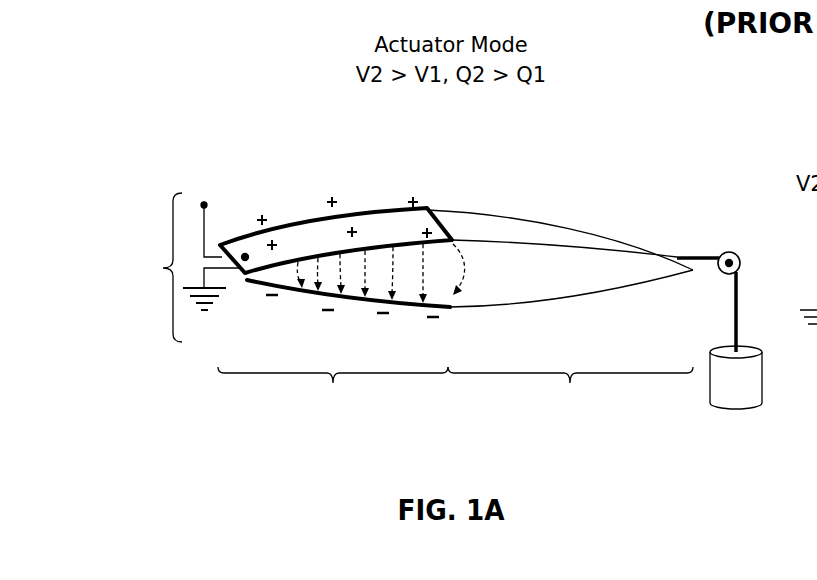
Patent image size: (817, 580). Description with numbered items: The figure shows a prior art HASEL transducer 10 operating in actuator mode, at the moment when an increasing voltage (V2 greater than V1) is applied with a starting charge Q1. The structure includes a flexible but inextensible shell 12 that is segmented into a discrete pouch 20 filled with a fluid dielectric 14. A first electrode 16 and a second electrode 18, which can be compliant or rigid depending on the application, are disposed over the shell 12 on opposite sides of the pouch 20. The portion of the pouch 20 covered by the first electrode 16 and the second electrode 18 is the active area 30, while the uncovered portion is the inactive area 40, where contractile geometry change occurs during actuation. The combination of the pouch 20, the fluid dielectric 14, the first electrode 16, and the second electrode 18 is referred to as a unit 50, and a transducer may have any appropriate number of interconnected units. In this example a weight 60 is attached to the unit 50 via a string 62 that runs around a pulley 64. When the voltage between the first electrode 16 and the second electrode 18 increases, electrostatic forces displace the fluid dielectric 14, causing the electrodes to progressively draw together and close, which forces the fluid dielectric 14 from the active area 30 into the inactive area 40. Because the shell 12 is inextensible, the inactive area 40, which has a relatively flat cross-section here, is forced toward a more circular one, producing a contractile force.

The HASEL transducer 10 is at (587, 167).
The shell 12 is at (480, 213).
The fluid dielectric 14 is at (567, 268).
The first electrode 16 is at (365, 205).
The second electrode 18 is at (297, 297).
The pouch 20 is at (607, 230).
The active area 30 is at (341, 309).
The inactive area 40 is at (570, 394).
The unit 50 is at (186, 249).
The weight 60 is at (762, 378).
The string 62 is at (697, 255).
The pulley 64 is at (729, 252).